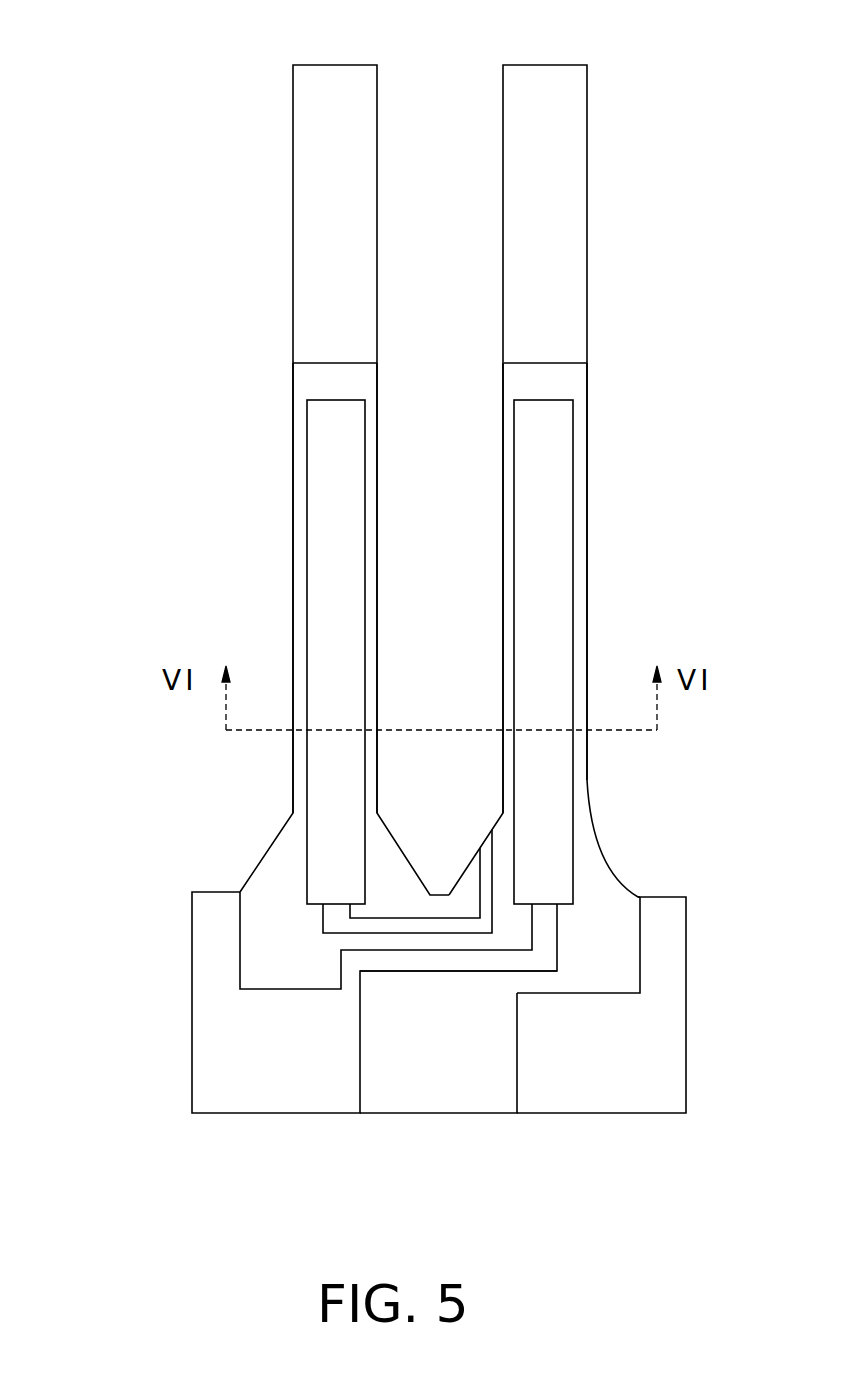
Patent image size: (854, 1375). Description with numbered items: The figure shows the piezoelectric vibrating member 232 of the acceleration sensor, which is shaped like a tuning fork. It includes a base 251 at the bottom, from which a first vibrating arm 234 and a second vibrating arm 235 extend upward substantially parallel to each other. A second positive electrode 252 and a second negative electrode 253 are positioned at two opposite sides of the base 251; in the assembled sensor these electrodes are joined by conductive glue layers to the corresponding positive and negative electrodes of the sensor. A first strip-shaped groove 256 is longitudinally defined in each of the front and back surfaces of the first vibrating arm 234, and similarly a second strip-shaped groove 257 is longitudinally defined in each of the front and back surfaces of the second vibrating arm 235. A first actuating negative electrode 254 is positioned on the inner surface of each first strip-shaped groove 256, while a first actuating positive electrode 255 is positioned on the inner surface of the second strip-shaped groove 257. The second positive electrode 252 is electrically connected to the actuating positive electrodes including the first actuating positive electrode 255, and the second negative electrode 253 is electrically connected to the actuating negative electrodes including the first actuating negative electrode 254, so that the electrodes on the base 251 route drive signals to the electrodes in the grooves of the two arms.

The piezoelectric vibrating member 232 is at (178, 78).
The first vibrating arm 234 is at (298, 240).
The second vibrating arm 235 is at (568, 233).
The base 251 is at (440, 1075).
The second positive electrode 252 is at (251, 1074).
The second negative electrode 253 is at (600, 1085).
The first actuating negative electrode 254 is at (330, 586).
The first actuating positive electrode 255 is at (553, 620).
The first strip-shaped groove 256 is at (307, 478).
The second strip-shaped groove 257 is at (573, 485).